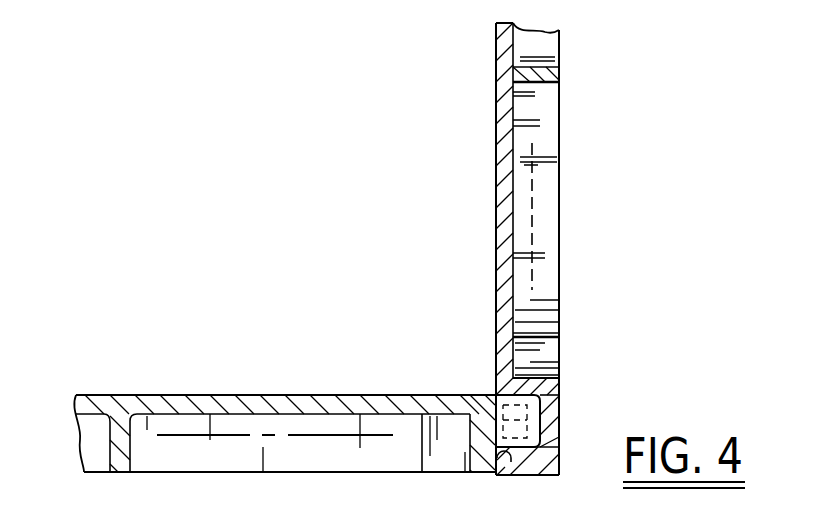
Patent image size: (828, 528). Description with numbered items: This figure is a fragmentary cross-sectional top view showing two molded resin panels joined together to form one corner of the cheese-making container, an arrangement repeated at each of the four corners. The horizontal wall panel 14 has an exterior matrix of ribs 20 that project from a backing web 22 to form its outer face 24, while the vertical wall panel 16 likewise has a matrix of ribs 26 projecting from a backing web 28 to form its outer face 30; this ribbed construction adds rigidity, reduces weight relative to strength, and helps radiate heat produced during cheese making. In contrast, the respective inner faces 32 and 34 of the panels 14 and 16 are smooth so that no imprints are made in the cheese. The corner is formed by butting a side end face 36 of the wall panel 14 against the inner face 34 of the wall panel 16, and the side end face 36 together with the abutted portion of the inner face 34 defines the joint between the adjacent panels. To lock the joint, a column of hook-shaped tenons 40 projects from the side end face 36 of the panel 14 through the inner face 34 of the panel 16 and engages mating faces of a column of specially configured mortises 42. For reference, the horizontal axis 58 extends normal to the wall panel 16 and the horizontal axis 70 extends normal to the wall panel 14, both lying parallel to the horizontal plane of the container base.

The wall panel 14 is at (270, 402).
The wall panel 16 is at (500, 199).
The ribs 20 is at (182, 455).
The backing web 22 is at (190, 405).
The outer face 24 is at (310, 473).
The ribs 26 is at (545, 136).
The backing web 28 is at (503, 169).
The outer face 30 is at (560, 228).
The inner face 32 is at (398, 395).
The inner face 34 is at (497, 318).
The side end face 36 is at (506, 462).
The hook-shaped tenons 40 is at (530, 411).
The mortises 42 is at (552, 439).
The horizontal axis 58 is at (243, 437).
The horizontal axis 70 is at (535, 280).